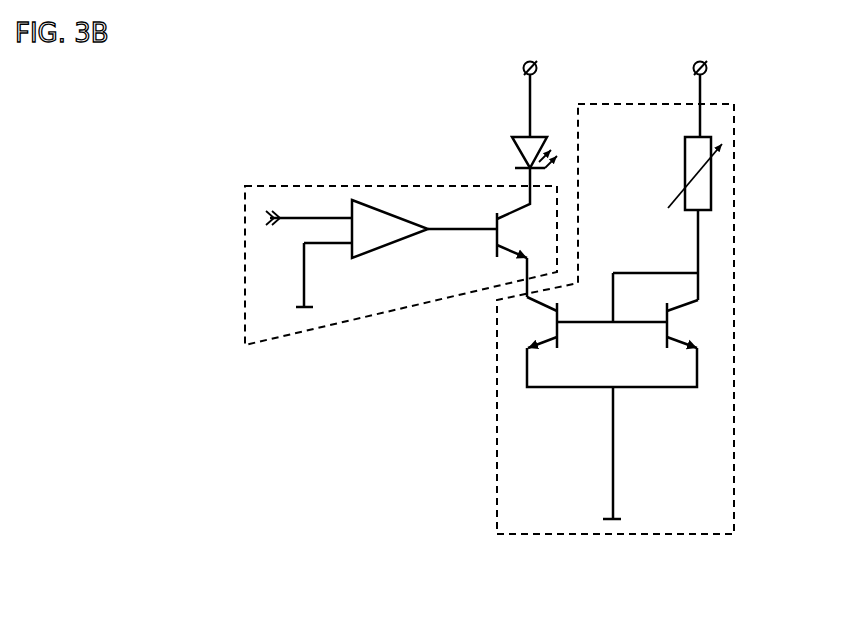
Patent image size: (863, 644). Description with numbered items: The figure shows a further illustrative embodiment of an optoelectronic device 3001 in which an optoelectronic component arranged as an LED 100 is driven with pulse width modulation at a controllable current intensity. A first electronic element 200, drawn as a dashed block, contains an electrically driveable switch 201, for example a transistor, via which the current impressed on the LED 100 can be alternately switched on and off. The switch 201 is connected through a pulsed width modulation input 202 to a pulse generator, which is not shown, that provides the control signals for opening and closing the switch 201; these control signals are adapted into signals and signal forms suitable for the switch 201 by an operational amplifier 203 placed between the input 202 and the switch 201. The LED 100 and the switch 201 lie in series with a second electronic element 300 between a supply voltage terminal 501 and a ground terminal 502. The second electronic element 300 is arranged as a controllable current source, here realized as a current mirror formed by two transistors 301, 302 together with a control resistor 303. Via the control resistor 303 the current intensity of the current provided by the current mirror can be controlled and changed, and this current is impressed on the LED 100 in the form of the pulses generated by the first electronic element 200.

The optoelectronic device 3001 is at (298, 77).
The LED 100 is at (531, 137).
The first electronic element 200 is at (417, 307).
The electrically driveable switch 201 is at (507, 212).
The pulsed width modulation input 202 is at (268, 219).
The operational amplifier 203 is at (373, 222).
The second electronic element 300 is at (515, 535).
The transistor 301 is at (672, 326).
The transistor 302 is at (540, 335).
The control resistor 303 is at (705, 180).
The supply voltage terminal 501 is at (535, 61).
The ground terminal 502 is at (297, 312).